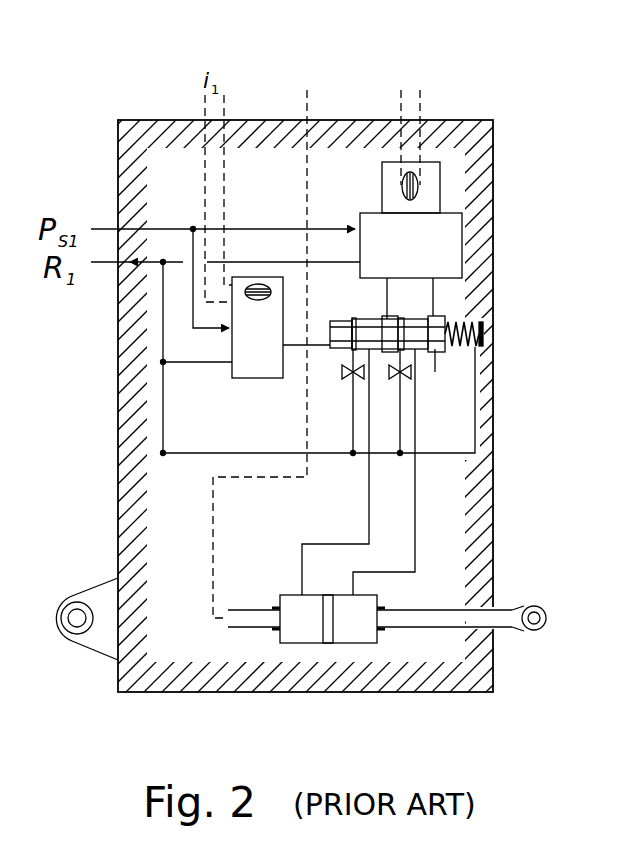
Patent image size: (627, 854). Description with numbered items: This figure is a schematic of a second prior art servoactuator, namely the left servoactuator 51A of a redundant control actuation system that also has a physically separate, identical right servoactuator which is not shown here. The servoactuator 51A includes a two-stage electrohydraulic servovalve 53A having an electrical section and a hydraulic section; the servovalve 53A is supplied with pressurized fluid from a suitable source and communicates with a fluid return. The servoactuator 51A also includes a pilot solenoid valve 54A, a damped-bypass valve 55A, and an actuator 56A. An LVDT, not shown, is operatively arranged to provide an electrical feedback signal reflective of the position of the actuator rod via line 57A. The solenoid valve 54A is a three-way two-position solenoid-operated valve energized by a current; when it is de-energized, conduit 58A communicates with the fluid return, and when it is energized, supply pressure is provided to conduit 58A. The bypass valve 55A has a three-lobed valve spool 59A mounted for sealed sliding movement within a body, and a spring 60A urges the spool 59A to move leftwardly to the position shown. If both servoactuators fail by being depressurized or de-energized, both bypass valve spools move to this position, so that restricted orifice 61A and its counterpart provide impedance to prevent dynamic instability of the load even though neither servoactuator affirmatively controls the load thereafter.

The left servoactuator 51A is at (142, 114).
The two-stage electrohydraulic servovalve 53A is at (456, 201).
The pilot solenoid valve 54A is at (280, 354).
The damped-bypass valve 55A is at (486, 336).
The actuator 56A is at (287, 652).
The line 57A is at (308, 92).
The conduit 58A is at (316, 352).
The three-lobed valve spool 59A is at (435, 372).
The spring 60A is at (466, 318).
The restricted orifice 61A is at (415, 372).